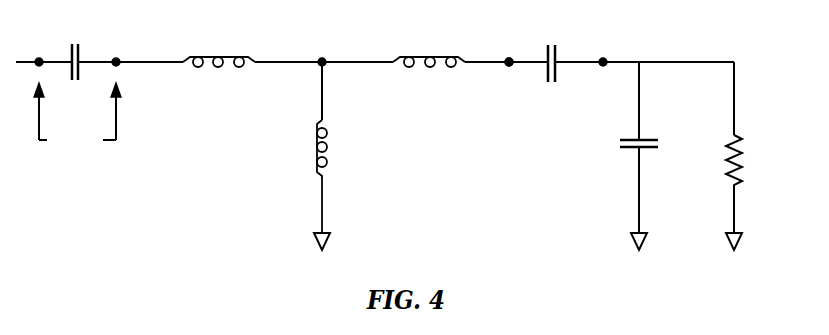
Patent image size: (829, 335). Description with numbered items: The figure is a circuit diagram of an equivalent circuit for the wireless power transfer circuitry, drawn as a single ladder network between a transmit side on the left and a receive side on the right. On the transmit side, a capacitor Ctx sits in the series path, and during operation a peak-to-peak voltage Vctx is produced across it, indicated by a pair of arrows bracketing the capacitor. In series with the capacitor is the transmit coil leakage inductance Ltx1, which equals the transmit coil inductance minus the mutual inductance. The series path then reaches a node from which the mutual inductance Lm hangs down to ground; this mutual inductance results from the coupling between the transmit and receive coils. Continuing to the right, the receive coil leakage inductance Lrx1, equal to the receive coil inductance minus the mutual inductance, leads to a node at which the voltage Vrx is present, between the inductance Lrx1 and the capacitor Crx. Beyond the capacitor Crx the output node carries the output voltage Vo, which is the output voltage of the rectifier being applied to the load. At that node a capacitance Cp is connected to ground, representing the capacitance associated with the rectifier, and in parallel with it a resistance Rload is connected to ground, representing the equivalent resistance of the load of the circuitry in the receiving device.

The capacitor Ctx is at (74, 49).
The peak-to-peak voltage Vctx is at (77, 115).
The transmit coil leakage inductance Ltx1 is at (219, 44).
The mutual inductance Lm is at (300, 185).
The receive coil leakage inductance Lrx1 is at (429, 46).
The voltage Vrx is at (505, 49).
The capacitor Crx is at (559, 51).
The capacitance Cp is at (623, 190).
The output voltage Vo is at (736, 56).
The resistance Rload is at (765, 179).